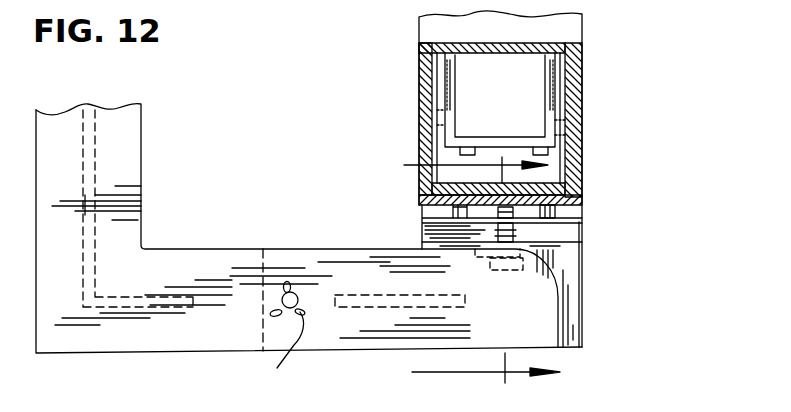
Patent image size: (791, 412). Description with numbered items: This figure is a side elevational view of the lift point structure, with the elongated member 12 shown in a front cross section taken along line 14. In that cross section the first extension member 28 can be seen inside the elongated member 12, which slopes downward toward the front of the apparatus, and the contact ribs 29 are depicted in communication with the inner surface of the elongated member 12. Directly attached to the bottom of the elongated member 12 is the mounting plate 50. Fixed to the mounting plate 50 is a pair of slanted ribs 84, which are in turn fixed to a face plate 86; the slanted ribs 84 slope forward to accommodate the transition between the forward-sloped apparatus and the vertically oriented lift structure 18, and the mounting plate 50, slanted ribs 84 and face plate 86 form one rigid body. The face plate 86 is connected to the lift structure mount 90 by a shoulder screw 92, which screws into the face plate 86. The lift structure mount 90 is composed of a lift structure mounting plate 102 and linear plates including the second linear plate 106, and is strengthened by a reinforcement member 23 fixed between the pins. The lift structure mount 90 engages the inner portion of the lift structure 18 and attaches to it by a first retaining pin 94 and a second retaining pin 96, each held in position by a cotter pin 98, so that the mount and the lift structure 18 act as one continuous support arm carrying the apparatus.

The elongated member 12 is at (588, 166).
The section line 14 is at (461, 274).
The lift structure 18 is at (223, 249).
The reinforcement member 23 is at (98, 262).
The first extension member 28 is at (458, 96).
The contact ribs 29 is at (557, 148).
The mounting plate 50 is at (588, 201).
The slanted ribs 84 is at (422, 213).
The face plate 86 is at (586, 228).
The lift structure mount 90 is at (592, 285).
The shoulder screw 92 is at (402, 243).
The first retaining pin 94 is at (528, 295).
The second retaining pin 96 is at (284, 290).
The cotter pin 98 is at (275, 351).
The lift structure mounting plate 102 is at (586, 241).
The second linear plate 106 is at (586, 330).